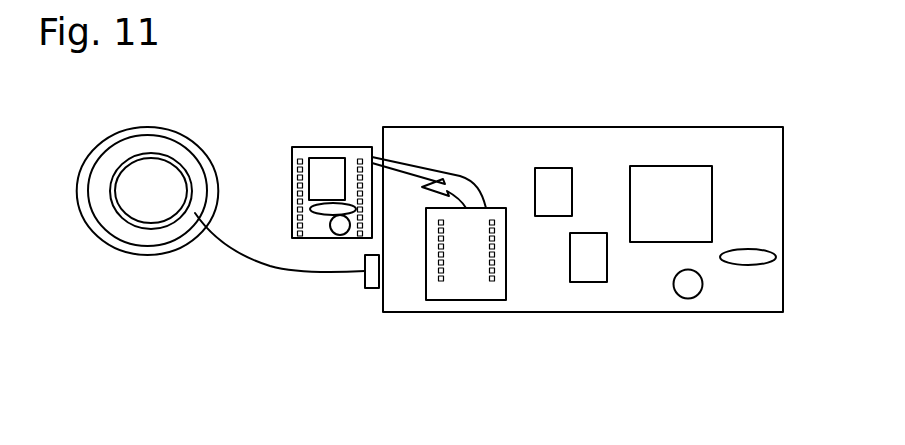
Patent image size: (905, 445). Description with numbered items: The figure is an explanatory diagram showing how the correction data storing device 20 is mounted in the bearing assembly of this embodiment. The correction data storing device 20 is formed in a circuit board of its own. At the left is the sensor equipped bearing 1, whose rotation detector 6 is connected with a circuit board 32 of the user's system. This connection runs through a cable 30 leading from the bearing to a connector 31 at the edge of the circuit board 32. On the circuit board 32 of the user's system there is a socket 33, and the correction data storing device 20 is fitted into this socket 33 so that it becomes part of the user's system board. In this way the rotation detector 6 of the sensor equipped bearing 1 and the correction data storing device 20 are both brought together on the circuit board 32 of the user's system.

The sensor equipped bearing 1 is at (142, 126).
The rotation detector 6 is at (160, 232).
The correction data storing device 20 is at (290, 163).
The cable 30 is at (253, 262).
The connector 31 is at (372, 290).
The circuit board 32 is at (633, 128).
The socket 33 is at (495, 300).